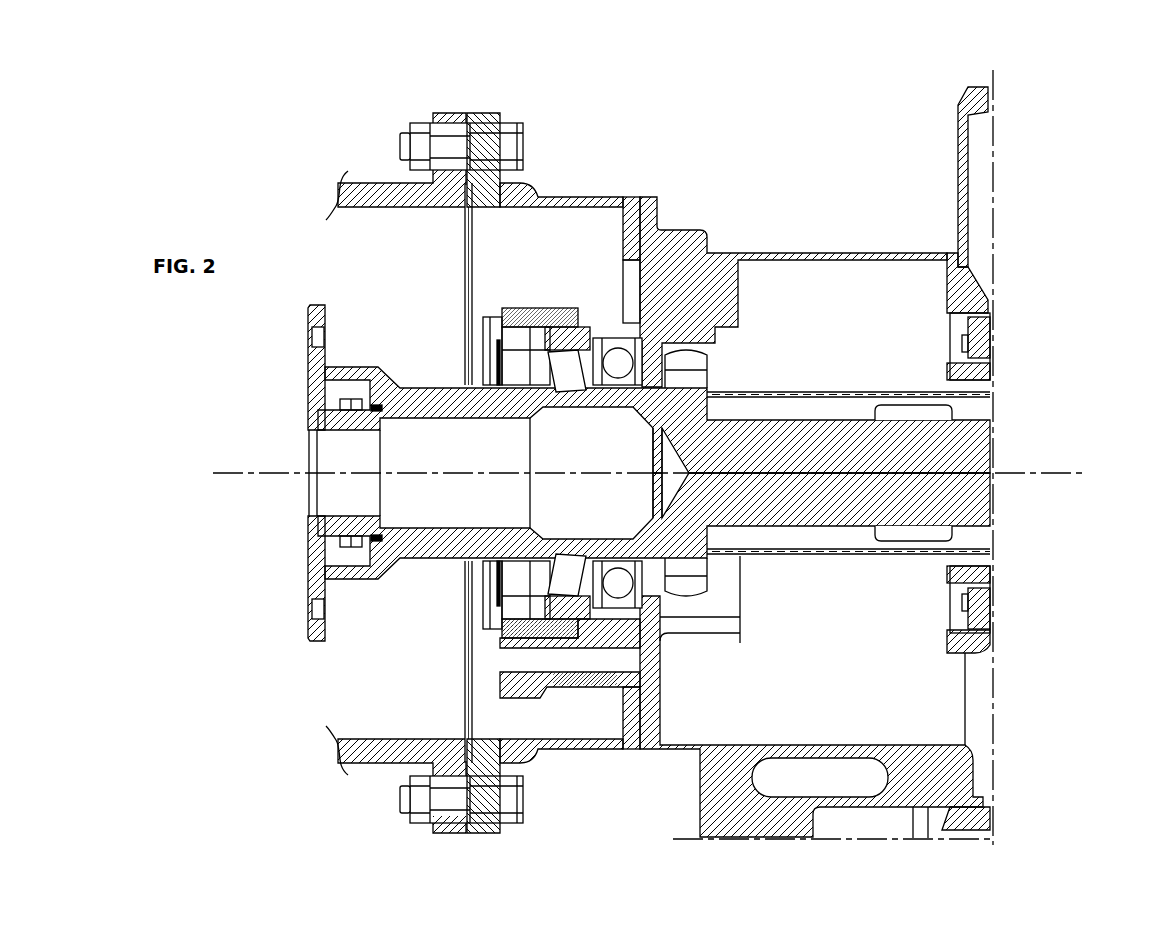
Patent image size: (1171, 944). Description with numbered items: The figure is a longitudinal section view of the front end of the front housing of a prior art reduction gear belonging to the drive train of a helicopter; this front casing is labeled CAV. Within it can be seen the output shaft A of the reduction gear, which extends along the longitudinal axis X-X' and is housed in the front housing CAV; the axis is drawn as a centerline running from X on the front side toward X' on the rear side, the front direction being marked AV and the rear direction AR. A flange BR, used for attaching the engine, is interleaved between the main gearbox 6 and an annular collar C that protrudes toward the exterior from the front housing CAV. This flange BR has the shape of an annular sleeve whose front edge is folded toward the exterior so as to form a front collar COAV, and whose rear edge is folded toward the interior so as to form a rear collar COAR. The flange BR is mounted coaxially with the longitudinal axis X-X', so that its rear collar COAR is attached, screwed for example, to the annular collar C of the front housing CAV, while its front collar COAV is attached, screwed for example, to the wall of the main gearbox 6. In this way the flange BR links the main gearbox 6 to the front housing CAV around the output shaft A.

The output shaft A is at (815, 450).
The annular collar C is at (745, 462).
The front housing CAV is at (680, 263).
The rear collar COAR is at (630, 233).
The front collar COAV is at (491, 822).
The flange BR is at (577, 200).
The main gearbox 6 is at (448, 838).
The longitudinal axis X is at (649, 440).
The longitudinal axis X' is at (1098, 439).
The front direction AV is at (249, 556).
The rear direction AR is at (1106, 556).